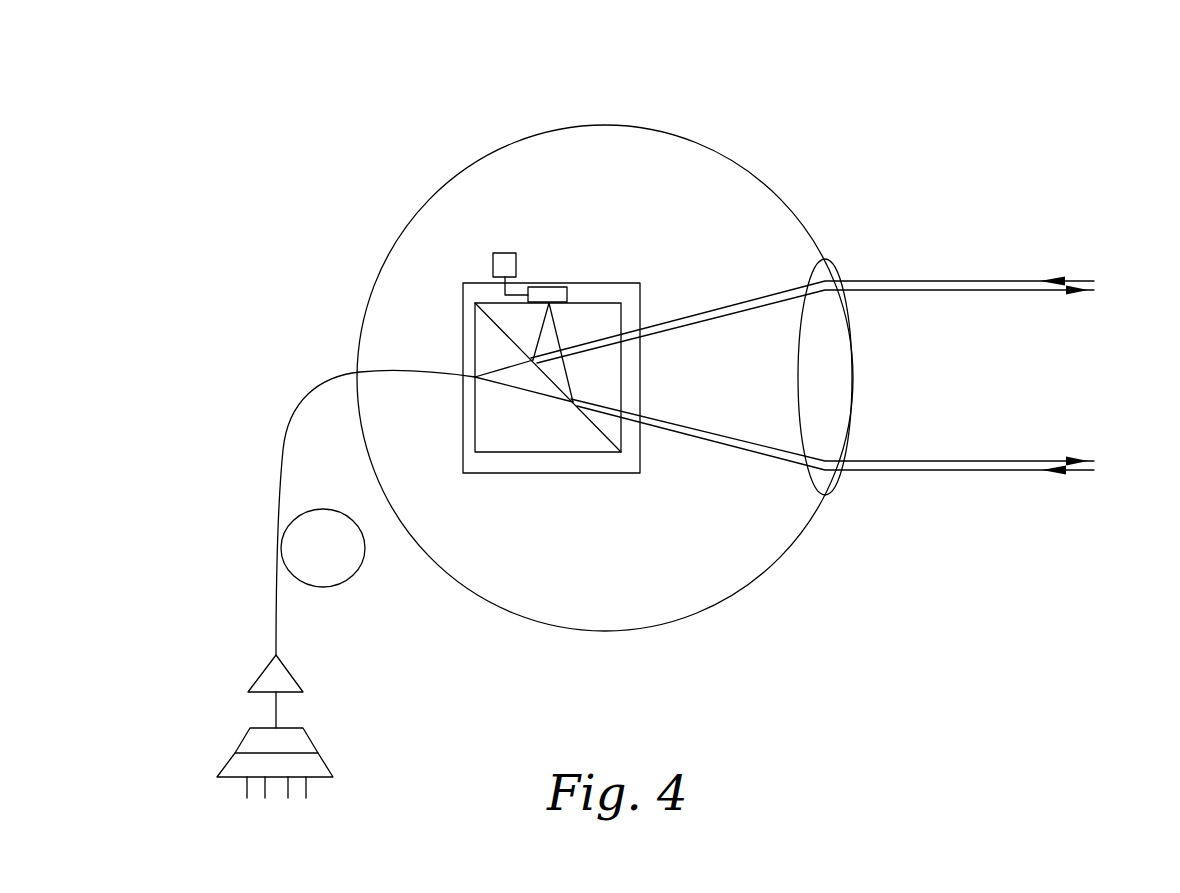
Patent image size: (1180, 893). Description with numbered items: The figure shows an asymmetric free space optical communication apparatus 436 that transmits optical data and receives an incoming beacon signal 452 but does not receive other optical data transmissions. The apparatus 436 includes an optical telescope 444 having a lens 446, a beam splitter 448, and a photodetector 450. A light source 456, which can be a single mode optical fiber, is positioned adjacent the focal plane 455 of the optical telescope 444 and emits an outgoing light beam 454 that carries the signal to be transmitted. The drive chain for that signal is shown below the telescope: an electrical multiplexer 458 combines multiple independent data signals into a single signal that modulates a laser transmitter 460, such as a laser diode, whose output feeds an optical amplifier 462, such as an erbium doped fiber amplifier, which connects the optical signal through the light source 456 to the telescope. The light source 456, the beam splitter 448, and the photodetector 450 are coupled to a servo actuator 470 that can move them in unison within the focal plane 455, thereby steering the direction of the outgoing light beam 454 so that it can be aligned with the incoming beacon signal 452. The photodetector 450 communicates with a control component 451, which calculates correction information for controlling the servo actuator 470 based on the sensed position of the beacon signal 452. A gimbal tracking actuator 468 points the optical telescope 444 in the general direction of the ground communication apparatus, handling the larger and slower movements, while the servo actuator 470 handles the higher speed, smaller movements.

The free space optical communication apparatus 436 is at (893, 74).
The optical telescope 444 is at (717, 264).
The lens 446 is at (853, 377).
The beam splitter 448 is at (598, 429).
The photodetector 450 is at (567, 284).
The control component 451 is at (498, 251).
The incoming beacon signal 452 is at (1086, 281).
The outgoing light beam 454 is at (962, 291).
The focal plane 455 is at (475, 437).
The light source 456 is at (281, 471).
The electrical multiplexer 458 is at (227, 764).
The laser transmitter 460 is at (311, 740).
The optical amplifier 462 is at (262, 673).
The gimbal tracking actuator 468 is at (725, 596).
The servo actuator 470 is at (580, 473).